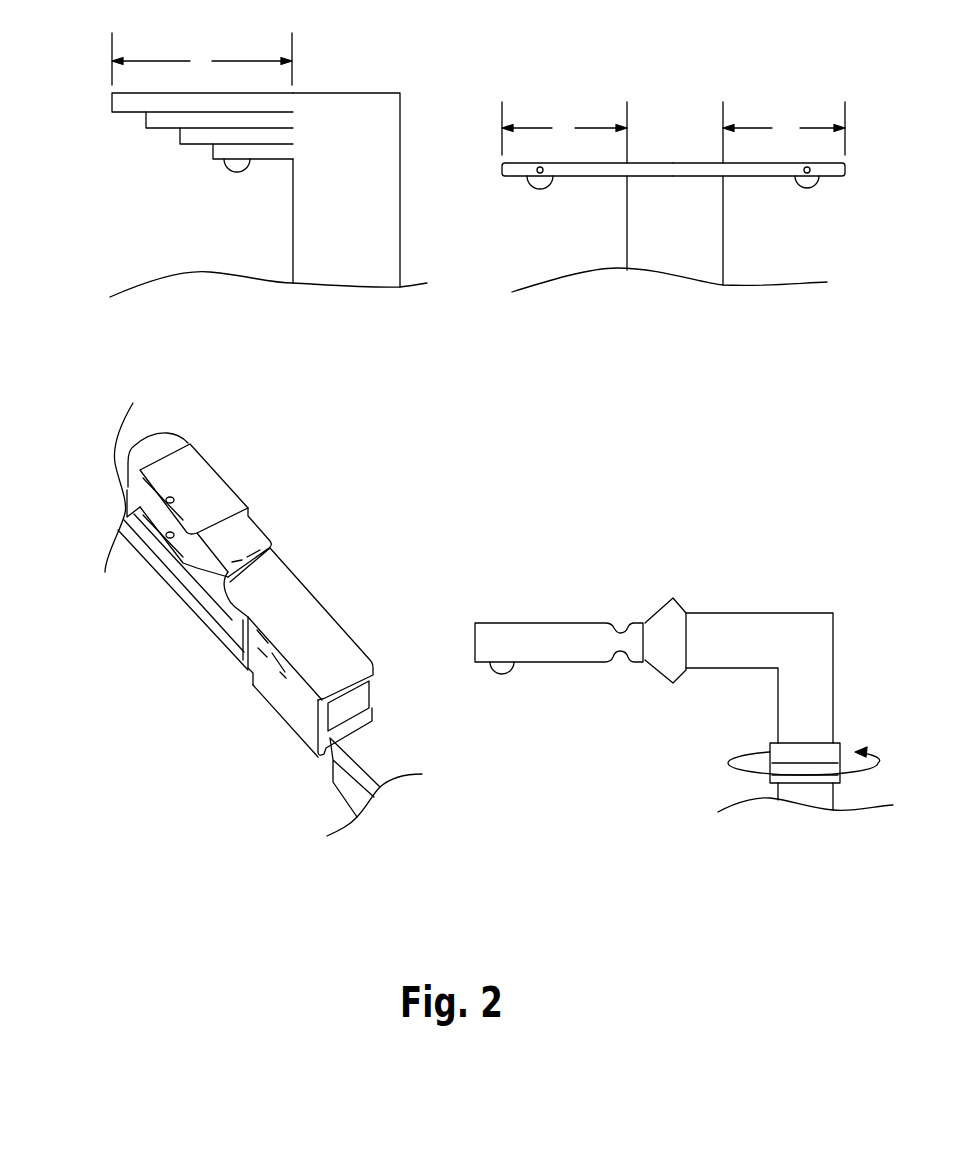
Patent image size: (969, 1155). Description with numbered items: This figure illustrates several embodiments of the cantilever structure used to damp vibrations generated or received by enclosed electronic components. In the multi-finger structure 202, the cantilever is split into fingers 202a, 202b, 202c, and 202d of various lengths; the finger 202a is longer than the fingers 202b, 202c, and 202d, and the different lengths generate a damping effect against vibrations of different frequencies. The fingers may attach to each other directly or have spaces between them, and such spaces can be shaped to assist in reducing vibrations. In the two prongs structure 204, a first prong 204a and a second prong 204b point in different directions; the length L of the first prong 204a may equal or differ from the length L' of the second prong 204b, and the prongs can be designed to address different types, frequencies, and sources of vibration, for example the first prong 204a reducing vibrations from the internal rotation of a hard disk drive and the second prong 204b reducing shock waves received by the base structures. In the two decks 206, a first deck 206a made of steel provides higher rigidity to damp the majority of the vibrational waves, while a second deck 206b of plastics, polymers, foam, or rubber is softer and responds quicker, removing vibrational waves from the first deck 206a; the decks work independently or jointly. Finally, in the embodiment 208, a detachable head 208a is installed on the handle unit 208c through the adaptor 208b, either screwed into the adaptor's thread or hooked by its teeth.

The multi-finger structure 202 is at (268, 185).
The finger 202a is at (112, 93).
The finger 202b is at (146, 118).
The finger 202c is at (180, 135).
The finger 202d is at (213, 152).
The two prongs structure 204 is at (673, 217).
The first prong 204a is at (502, 170).
The second prong 204b is at (846, 170).
The two decks 206 is at (263, 632).
The first deck 206a is at (200, 570).
The second deck 206b is at (233, 620).
The cantilever structure with detachable head 208 is at (774, 825).
The detachable head 208a is at (572, 630).
The adaptor 208b is at (678, 602).
The handle unit 208c is at (800, 623).